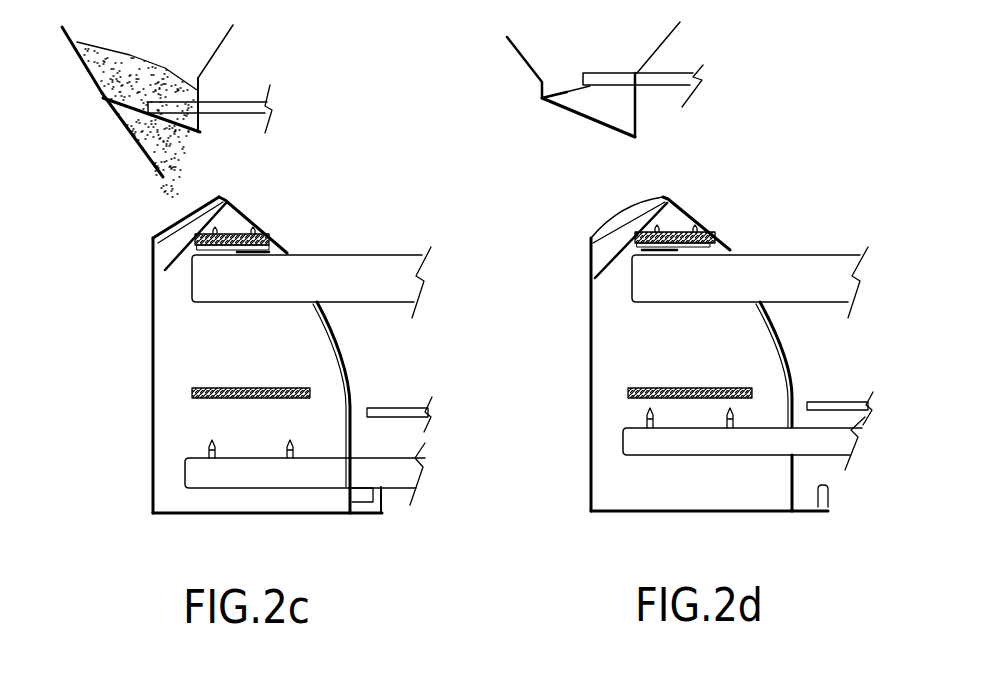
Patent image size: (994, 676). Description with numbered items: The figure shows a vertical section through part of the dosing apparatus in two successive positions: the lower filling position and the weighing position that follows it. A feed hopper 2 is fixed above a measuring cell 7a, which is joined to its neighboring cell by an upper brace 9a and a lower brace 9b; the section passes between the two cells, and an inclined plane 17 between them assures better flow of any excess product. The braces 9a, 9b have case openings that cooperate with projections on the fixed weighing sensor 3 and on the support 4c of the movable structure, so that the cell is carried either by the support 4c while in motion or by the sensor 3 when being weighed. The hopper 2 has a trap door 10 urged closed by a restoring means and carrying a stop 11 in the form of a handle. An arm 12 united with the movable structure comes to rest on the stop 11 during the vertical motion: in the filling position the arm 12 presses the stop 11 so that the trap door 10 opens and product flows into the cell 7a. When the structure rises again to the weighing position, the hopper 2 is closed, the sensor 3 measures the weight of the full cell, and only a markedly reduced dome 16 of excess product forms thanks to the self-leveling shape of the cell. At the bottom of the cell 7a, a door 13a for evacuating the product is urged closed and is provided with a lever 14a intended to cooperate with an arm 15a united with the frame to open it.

In FIG. 2C, the feed hopper 2 is at (92, 65).
In FIG. 2D, the feed hopper 2 is at (517, 50).
In FIG. 2C, the weighing sensor 3 is at (345, 270).
In FIG. 2D, the weighing sensor 3 is at (772, 267).
In FIG. 2C, the support 4c is at (392, 457).
In FIG. 2D, the support 4c is at (828, 452).
In FIG. 2C, the cell 7a is at (153, 345).
In FIG. 2D, the cell 7a is at (590, 348).
In FIG. 2C, the brace 9a is at (270, 238).
In FIG. 2D, the brace 9a is at (717, 235).
In FIG. 2C, the brace 9b is at (192, 397).
In FIG. 2D, the brace 9b is at (628, 392).
In FIG. 2C, the trap door 10 is at (140, 148).
In FIG. 2D, the trap door 10 is at (597, 123).
In FIG. 2C, the stop 11 is at (123, 103).
In FIG. 2D, the stop 11 is at (556, 108).
In FIG. 2C, the arm 12 is at (220, 102).
In FIG. 2D, the arm 12 is at (658, 78).
In FIG. 2C, the door 13a is at (180, 513).
In FIG. 2D, the door 13a is at (615, 511).
In FIG. 2C, the lever 14a is at (383, 502).
In FIG. 2D, the lever 14a is at (830, 507).
In FIG. 2C, the arm 15a is at (397, 407).
In FIG. 2D, the arm 15a is at (832, 402).
In FIG. 2D, the dome 16 is at (627, 212).
In FIG. 2C, the inclined plane 17 is at (160, 250).
In FIG. 2D, the inclined plane 17 is at (600, 260).